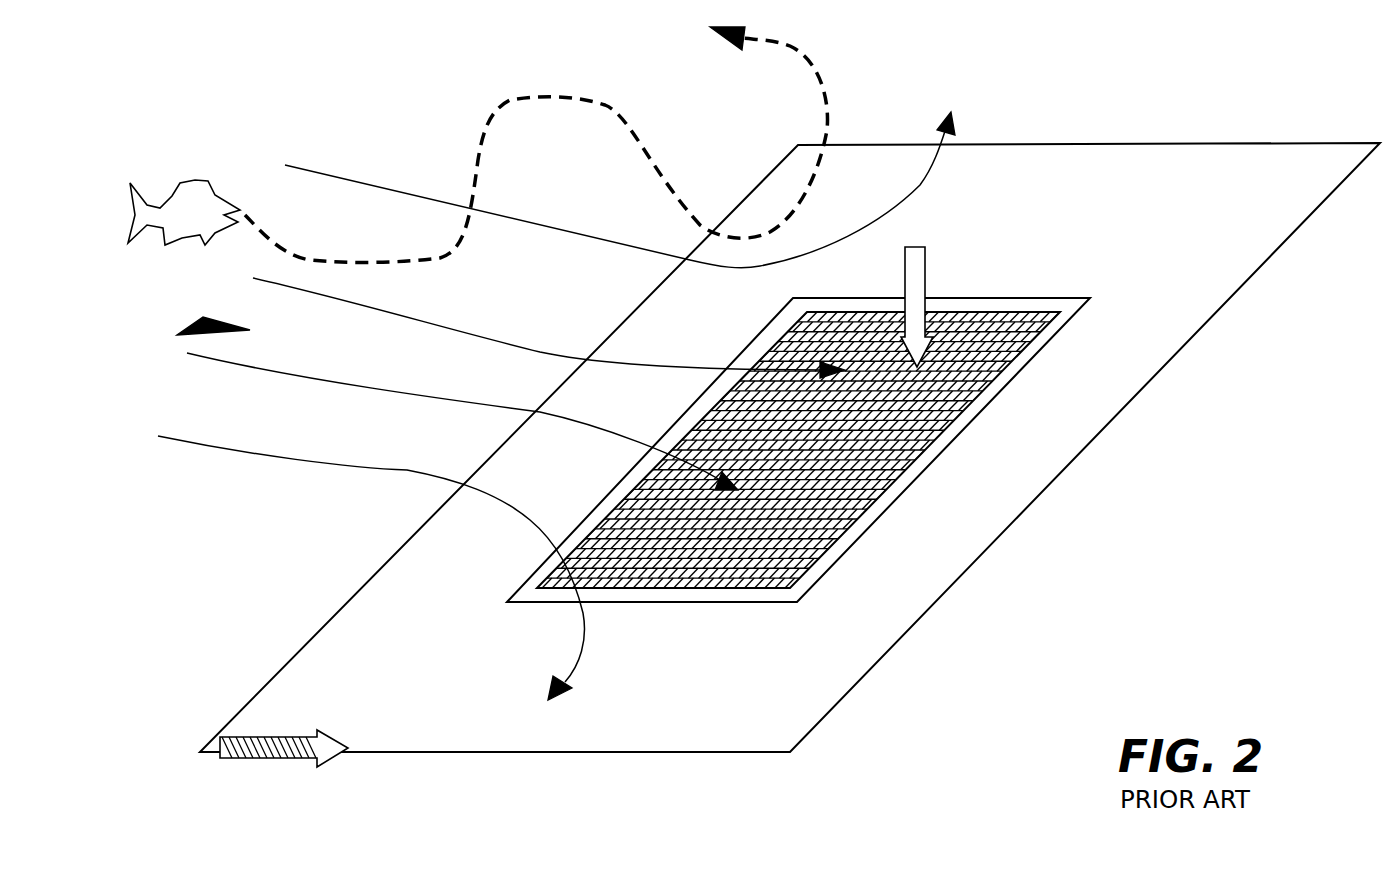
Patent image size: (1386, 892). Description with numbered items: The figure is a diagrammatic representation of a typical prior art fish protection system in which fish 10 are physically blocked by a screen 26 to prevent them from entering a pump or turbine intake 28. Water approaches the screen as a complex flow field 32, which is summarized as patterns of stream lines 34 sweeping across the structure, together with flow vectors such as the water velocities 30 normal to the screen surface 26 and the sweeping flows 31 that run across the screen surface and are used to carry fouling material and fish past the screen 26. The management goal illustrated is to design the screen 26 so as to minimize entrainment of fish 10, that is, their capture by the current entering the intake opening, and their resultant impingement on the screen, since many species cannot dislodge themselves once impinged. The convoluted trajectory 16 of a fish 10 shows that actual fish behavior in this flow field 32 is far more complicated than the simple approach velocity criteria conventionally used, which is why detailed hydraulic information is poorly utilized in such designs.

The fish 10 is at (178, 197).
The convoluted trajectory 16 is at (490, 125).
The screen 26 is at (825, 500).
The pump or turbine intake 28 is at (963, 412).
The water velocities normal to the screen surface 30 is at (920, 270).
The sweeping flows 31 is at (290, 758).
The complex flow fields 32 is at (180, 331).
The stream lines 34 is at (580, 232).